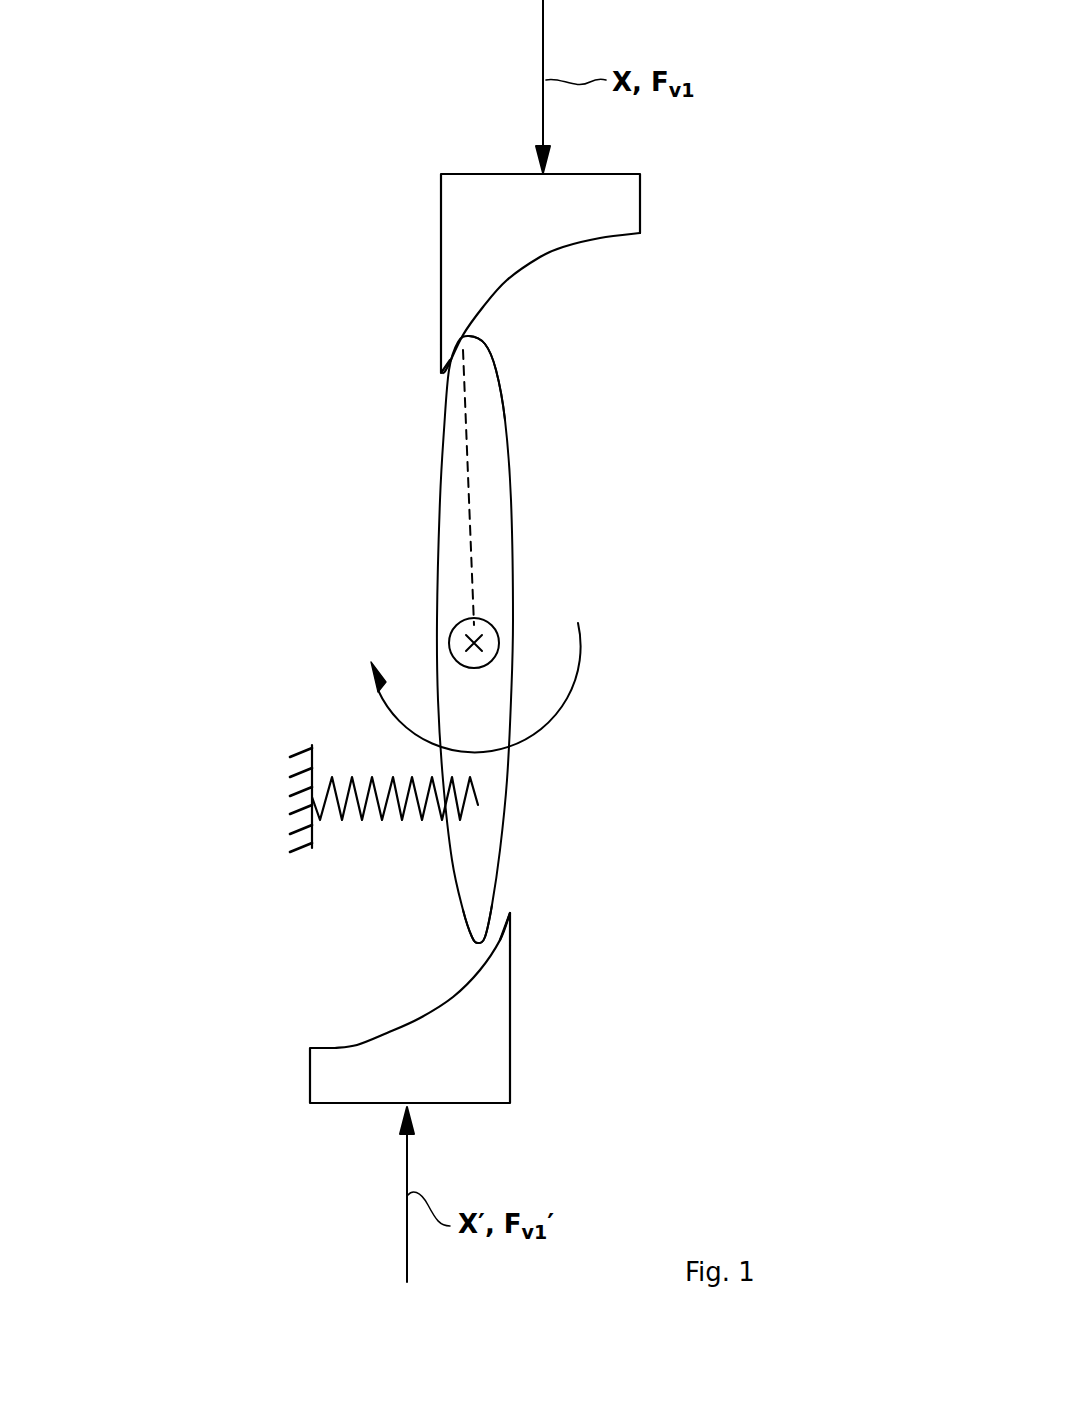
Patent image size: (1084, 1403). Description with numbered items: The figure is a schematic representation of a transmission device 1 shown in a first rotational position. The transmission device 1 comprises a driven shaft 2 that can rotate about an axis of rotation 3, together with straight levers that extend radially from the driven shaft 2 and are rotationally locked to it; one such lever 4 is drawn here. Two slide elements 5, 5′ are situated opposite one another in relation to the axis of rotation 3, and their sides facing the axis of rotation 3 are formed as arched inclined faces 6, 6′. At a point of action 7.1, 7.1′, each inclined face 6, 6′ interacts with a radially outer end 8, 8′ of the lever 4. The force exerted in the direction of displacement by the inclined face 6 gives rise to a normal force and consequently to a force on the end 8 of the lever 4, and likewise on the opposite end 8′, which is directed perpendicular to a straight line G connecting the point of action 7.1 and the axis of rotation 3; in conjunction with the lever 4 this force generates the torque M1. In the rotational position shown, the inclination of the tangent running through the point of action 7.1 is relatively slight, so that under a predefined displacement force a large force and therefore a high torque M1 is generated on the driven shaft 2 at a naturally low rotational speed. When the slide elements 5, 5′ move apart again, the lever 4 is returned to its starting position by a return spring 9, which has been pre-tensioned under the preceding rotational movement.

The transmission device 1 is at (612, 368).
The driven shaft 2 is at (458, 655).
The axis of rotation 3 is at (491, 623).
The lever 4 is at (456, 535).
The slide element 5 is at (455, 240).
The slide element 5′ is at (340, 1073).
The arched inclined face 6 is at (561, 246).
The arched inclined face 6′ is at (417, 1027).
The point of action 7.1 is at (464, 340).
The point of action 7.1′ is at (505, 935).
The radially outer end of the lever 8 is at (478, 360).
The radially outer end of the lever 8′ is at (463, 916).
The return spring 9 is at (372, 782).
The straight line G is at (471, 473).
The torque M1 is at (571, 704).